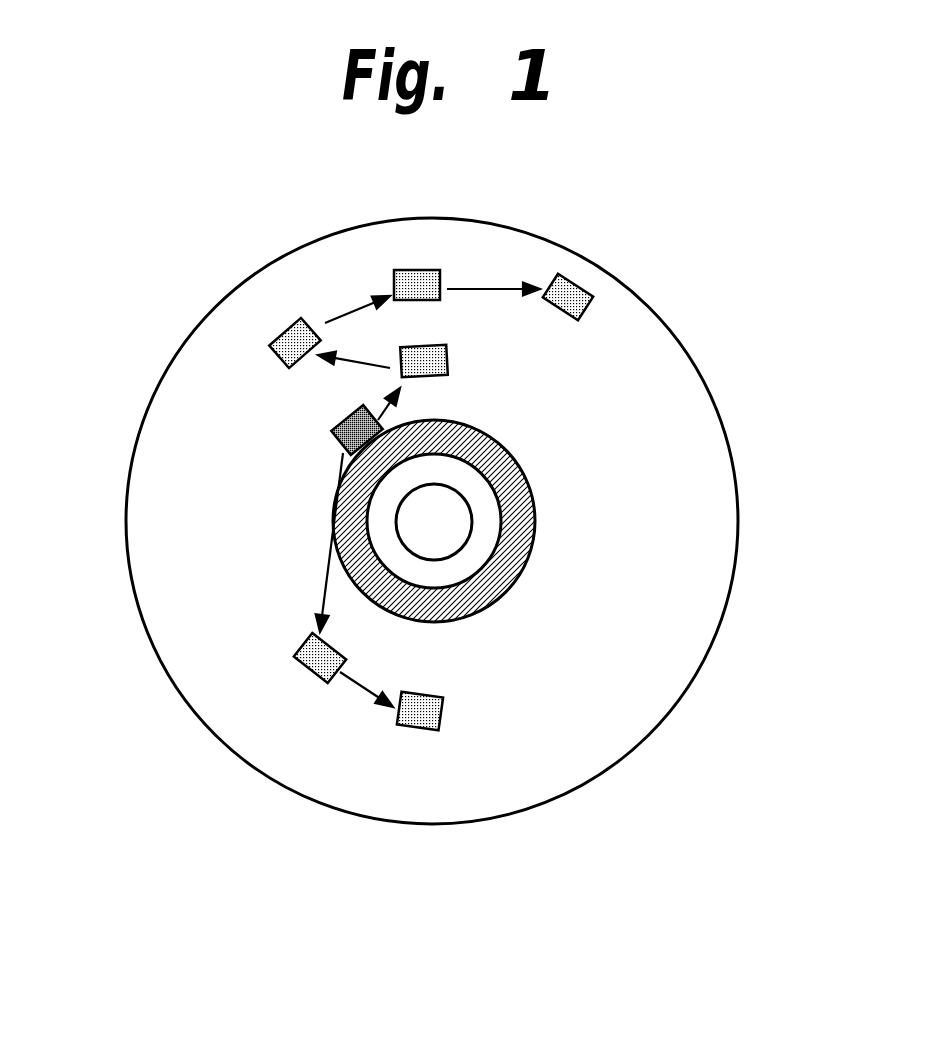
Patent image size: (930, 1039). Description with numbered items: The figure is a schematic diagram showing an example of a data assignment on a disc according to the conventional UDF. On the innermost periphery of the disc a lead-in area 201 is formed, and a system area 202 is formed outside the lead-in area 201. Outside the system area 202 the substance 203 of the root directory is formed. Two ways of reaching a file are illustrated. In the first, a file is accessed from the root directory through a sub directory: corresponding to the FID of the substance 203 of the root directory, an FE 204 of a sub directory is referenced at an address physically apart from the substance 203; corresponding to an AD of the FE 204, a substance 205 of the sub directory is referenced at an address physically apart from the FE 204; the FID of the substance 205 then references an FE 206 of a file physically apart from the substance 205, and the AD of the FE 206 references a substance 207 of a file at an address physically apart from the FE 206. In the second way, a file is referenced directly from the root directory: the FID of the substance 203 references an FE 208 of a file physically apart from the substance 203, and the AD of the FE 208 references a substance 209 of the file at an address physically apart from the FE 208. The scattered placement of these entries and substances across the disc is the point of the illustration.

The lead-in area 201 is at (477, 496).
The system area 202 is at (510, 553).
The substance of root directory 203 is at (331, 438).
The FE of sub directory 204 is at (447, 357).
The substance of sub directory 205 is at (272, 346).
The FE of file 206 is at (397, 272).
The substance of file 207 is at (570, 274).
The FE of file 208 is at (312, 652).
The substance of file 209 is at (407, 727).